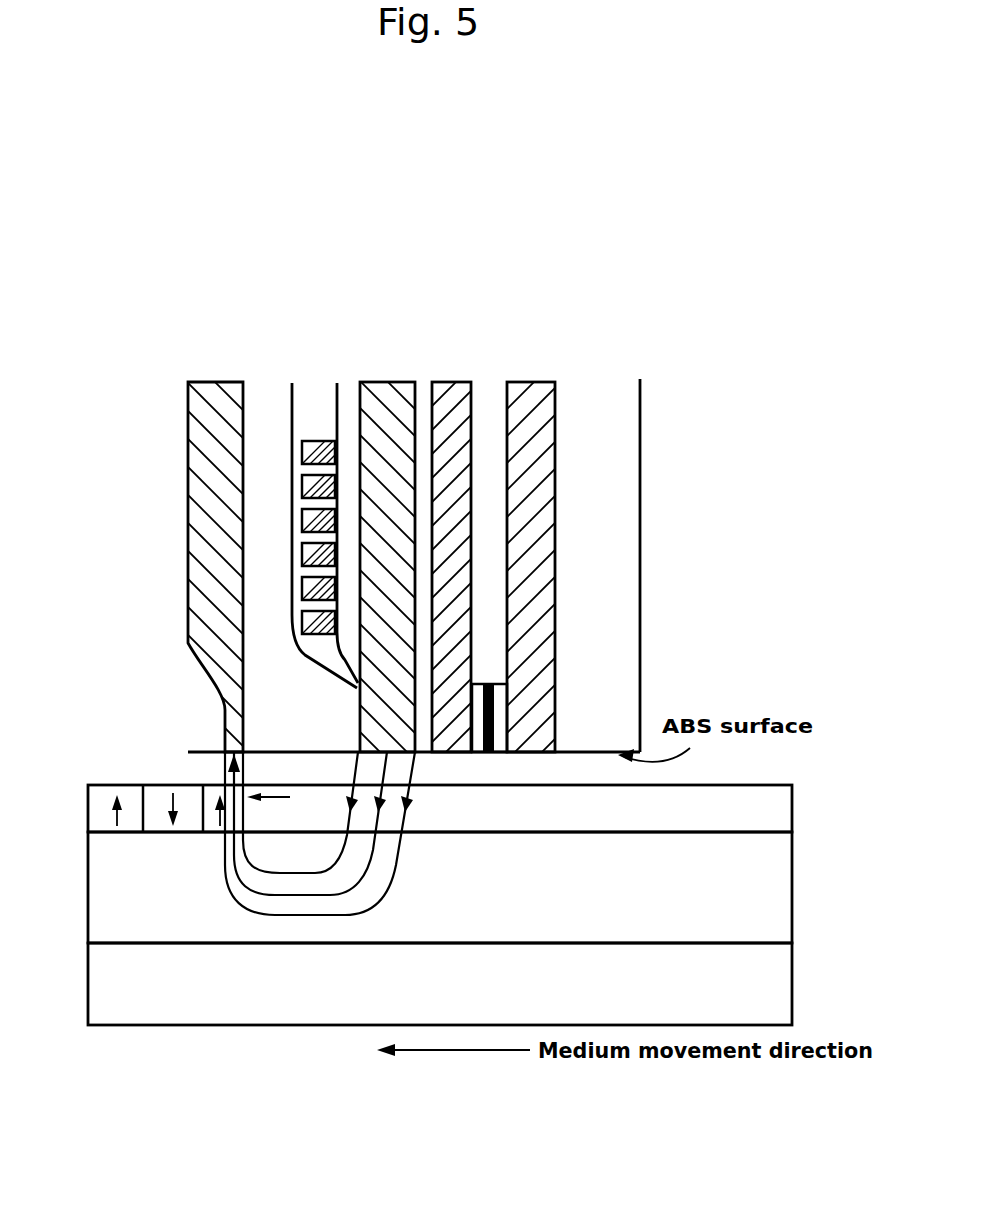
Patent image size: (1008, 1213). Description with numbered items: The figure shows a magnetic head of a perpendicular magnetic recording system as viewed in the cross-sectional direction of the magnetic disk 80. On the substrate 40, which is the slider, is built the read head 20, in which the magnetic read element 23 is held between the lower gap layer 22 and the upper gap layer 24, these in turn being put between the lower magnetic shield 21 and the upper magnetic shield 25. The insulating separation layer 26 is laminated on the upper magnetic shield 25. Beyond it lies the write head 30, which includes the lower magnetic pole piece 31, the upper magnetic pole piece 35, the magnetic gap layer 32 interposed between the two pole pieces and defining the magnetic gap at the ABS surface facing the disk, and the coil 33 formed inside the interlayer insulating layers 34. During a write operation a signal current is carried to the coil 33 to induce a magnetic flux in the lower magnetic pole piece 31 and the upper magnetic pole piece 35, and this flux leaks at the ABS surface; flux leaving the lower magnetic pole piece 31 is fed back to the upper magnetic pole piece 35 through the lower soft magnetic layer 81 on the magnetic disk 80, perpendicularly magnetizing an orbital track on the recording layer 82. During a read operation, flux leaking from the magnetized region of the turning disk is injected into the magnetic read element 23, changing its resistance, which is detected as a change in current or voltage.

The read head 20 is at (554, 367).
The lower magnetic shield 21 is at (540, 408).
The lower gap layer 22 is at (500, 714).
The magnetic read element 23 is at (489, 710).
The upper gap layer 24 is at (478, 726).
The upper magnetic shield 25 is at (473, 403).
The insulating separation layer 26 is at (422, 393).
The write head 30 is at (416, 370).
The lower magnetic pole piece 31 is at (389, 393).
The magnetic gap layer 32 is at (262, 400).
The coil 33 is at (304, 452).
The interlayer insulating layers 34 is at (309, 400).
The upper magnetic pole piece 35 is at (212, 404).
The substrate 40 is at (625, 555).
The magnetic disk 80 is at (772, 985).
The lower soft magnetic layer 81 is at (772, 894).
The recording layer 82 is at (772, 810).